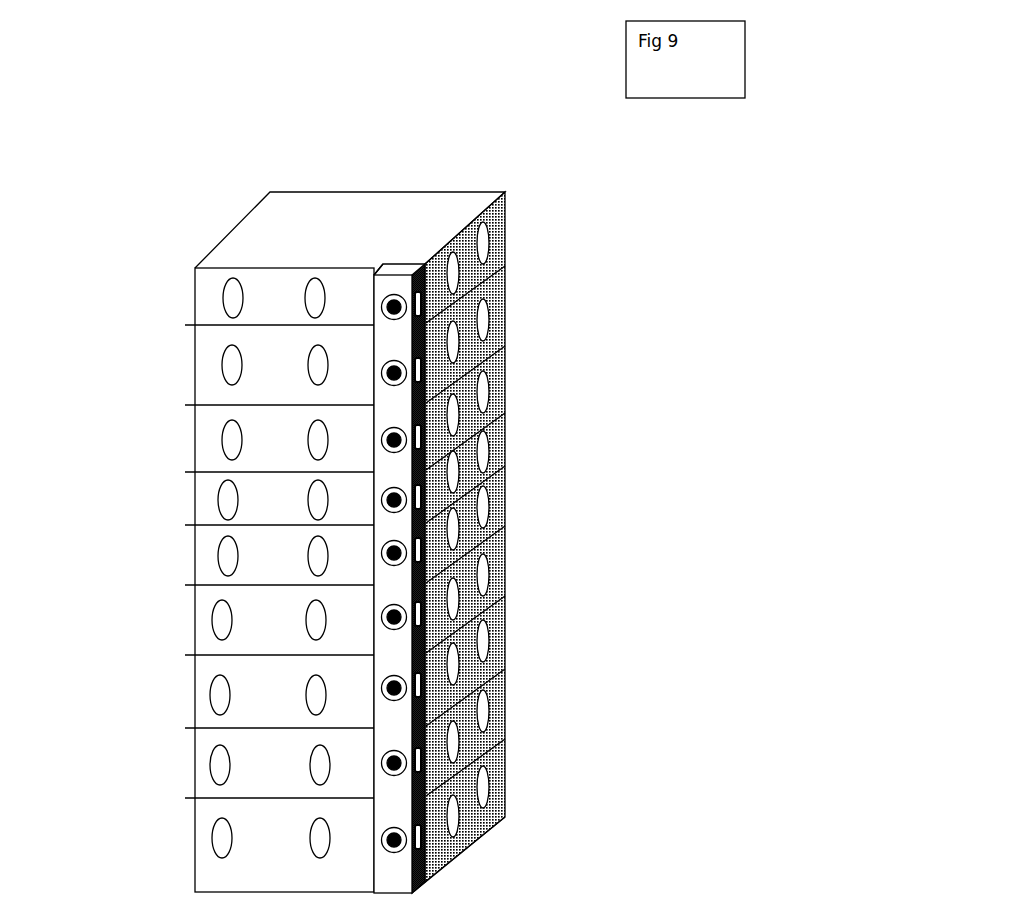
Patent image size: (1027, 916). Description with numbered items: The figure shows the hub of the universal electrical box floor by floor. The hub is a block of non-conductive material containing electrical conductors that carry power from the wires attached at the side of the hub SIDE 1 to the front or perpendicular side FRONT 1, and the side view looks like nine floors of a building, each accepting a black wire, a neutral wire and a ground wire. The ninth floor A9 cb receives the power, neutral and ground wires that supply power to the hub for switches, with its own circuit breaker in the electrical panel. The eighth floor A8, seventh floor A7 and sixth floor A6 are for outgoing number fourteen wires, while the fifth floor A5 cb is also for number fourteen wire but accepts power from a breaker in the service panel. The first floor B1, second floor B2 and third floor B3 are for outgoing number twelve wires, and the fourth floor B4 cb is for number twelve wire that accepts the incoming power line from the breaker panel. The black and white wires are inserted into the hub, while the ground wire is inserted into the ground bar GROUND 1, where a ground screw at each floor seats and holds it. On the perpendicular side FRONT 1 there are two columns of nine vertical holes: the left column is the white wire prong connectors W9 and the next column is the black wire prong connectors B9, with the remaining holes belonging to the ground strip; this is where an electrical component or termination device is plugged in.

The ninth floor A9 cb is at (517, 234).
The eighth floor A8 is at (515, 309).
The seventh floor A7 is at (510, 381).
The sixth floor A6 is at (512, 440).
The fifth floor A5 cb is at (515, 500).
The fourth floor B4 cb is at (510, 571).
The third floor B3 is at (510, 628).
The second floor B2 is at (510, 707).
The first floor B1 is at (508, 775).
The black wire prong connectors B9 is at (313, 298).
The white wire prong connectors W9 is at (230, 300).
The front or perpendicular side FRONT 1 is at (248, 871).
The side of hub SIDE 1 is at (475, 817).
The ground bar GROUND 1 is at (400, 878).